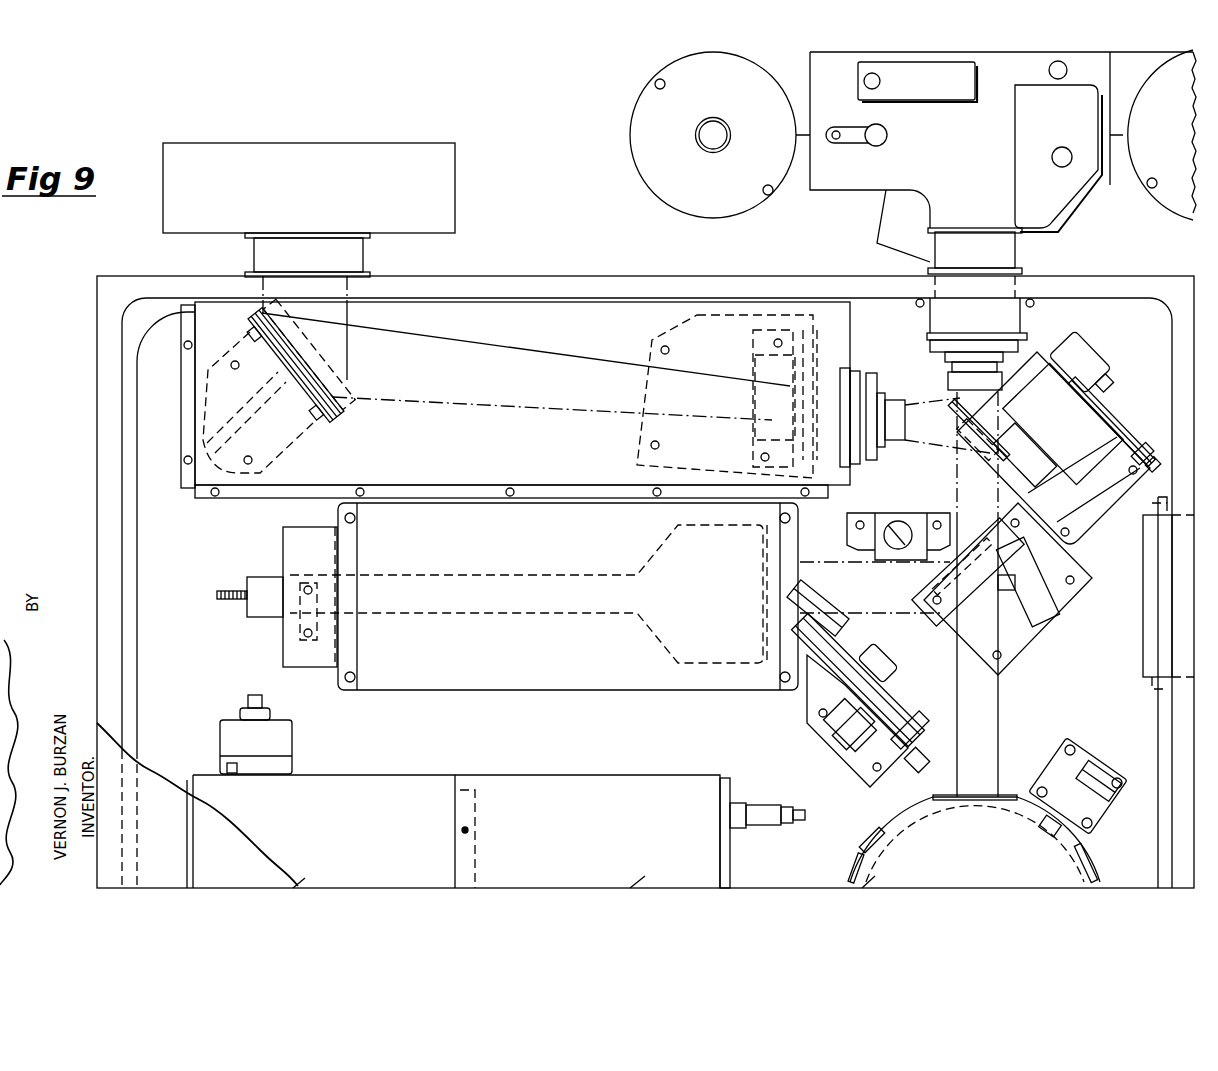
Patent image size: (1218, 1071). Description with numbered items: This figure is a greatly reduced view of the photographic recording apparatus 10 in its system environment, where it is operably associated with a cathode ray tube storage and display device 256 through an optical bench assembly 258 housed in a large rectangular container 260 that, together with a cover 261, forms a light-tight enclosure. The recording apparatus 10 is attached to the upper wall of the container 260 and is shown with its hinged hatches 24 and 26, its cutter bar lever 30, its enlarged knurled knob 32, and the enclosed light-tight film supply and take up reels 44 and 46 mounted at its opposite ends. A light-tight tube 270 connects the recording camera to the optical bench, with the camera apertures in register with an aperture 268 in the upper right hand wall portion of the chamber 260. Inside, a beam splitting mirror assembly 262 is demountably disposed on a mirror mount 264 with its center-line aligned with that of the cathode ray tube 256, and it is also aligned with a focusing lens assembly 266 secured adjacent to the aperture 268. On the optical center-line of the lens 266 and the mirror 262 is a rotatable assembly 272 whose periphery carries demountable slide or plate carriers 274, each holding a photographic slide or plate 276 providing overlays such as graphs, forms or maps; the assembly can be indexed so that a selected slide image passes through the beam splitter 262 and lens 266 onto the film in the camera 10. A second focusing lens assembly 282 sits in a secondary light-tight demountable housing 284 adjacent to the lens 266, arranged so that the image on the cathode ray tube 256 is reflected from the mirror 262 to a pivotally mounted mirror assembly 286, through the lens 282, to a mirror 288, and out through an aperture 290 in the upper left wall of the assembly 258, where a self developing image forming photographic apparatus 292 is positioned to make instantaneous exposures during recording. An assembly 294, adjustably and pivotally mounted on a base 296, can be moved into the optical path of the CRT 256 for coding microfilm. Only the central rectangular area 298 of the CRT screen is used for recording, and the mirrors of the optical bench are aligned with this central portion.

The photographic recording apparatus 10 is at (857, 213).
The hinged hatch 24 is at (1020, 146).
The hinged hatch 26 is at (935, 100).
The cutter bar lever 30 is at (863, 148).
The enlarged knurled knob 32 is at (1048, 70).
The film supply reel 44 is at (1172, 198).
The film take-up reel 46 is at (638, 128).
The cathode ray tube storage and display device 256 is at (645, 557).
The optical bench assembly 258 is at (1128, 372).
The rectangular container 260 is at (122, 542).
The cover 261 is at (165, 790).
The beam splitting mirror assembly 262 is at (945, 638).
The mirror mount 264 is at (1020, 648).
The focusing lens assembly 266 is at (950, 376).
The aperture 268 is at (932, 278).
The light-tight tube 270 is at (1015, 256).
The rotatable assembly 272 is at (1096, 850).
The photographic slide or plate carrier 274 is at (866, 845).
The photographic slide or plate 276 is at (974, 795).
The second focusing lens assembly 282 is at (893, 445).
The secondary light-tight demountable housing 284 is at (262, 487).
The pivotally mounted mirror assembly 286 is at (985, 447).
The mirror 288 is at (330, 381).
The aperture 290 is at (262, 277).
The self developing image forming photographic apparatus 292 is at (455, 205).
The coding assembly 294 is at (812, 600).
The base 296 is at (808, 704).
The central rectangular area 298 is at (762, 590).